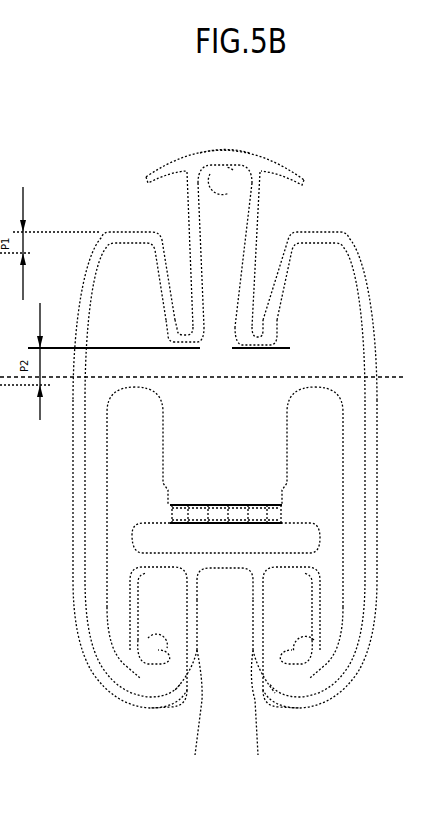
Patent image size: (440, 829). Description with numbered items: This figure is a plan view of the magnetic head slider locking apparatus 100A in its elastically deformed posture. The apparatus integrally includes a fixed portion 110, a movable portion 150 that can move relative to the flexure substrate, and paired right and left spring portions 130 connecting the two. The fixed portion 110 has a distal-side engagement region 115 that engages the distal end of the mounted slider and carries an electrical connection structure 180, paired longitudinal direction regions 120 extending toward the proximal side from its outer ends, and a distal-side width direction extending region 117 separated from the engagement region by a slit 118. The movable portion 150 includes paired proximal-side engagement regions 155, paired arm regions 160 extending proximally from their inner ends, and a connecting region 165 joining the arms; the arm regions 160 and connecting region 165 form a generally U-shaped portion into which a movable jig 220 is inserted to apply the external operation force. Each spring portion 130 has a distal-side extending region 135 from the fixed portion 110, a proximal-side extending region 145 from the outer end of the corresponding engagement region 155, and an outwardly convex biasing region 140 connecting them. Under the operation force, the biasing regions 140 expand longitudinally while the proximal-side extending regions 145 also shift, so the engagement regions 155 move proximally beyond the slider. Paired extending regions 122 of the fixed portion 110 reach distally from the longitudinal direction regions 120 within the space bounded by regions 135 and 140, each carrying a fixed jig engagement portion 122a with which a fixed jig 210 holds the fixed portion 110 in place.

The magnetic head slider locking apparatus 100A is at (313, 130).
The movable portion 150 is at (156, 162).
The movable jig 220 is at (257, 154).
The connecting region 165 is at (231, 165).
The arm regions 160 is at (196, 241).
The proximal-side engagement regions 155 is at (198, 344).
The proximal-side extending region 145 is at (170, 311).
The spring portions 130 is at (60, 549).
The biasing region 140 is at (370, 580).
The longitudinal direction regions 120 is at (152, 462).
The distal-side engagement region 115 is at (226, 500).
The electrical connection structure 180 is at (201, 500).
The slit 118 is at (185, 541).
The distal-side width direction extending region 117 is at (200, 570).
The fixed portion 110 is at (229, 533).
The distal-side extending region 135 is at (198, 733).
The fixed jig 210 is at (152, 647).
The extending regions 122 is at (333, 631).
The fixed jig engagement portion 122a is at (143, 671).